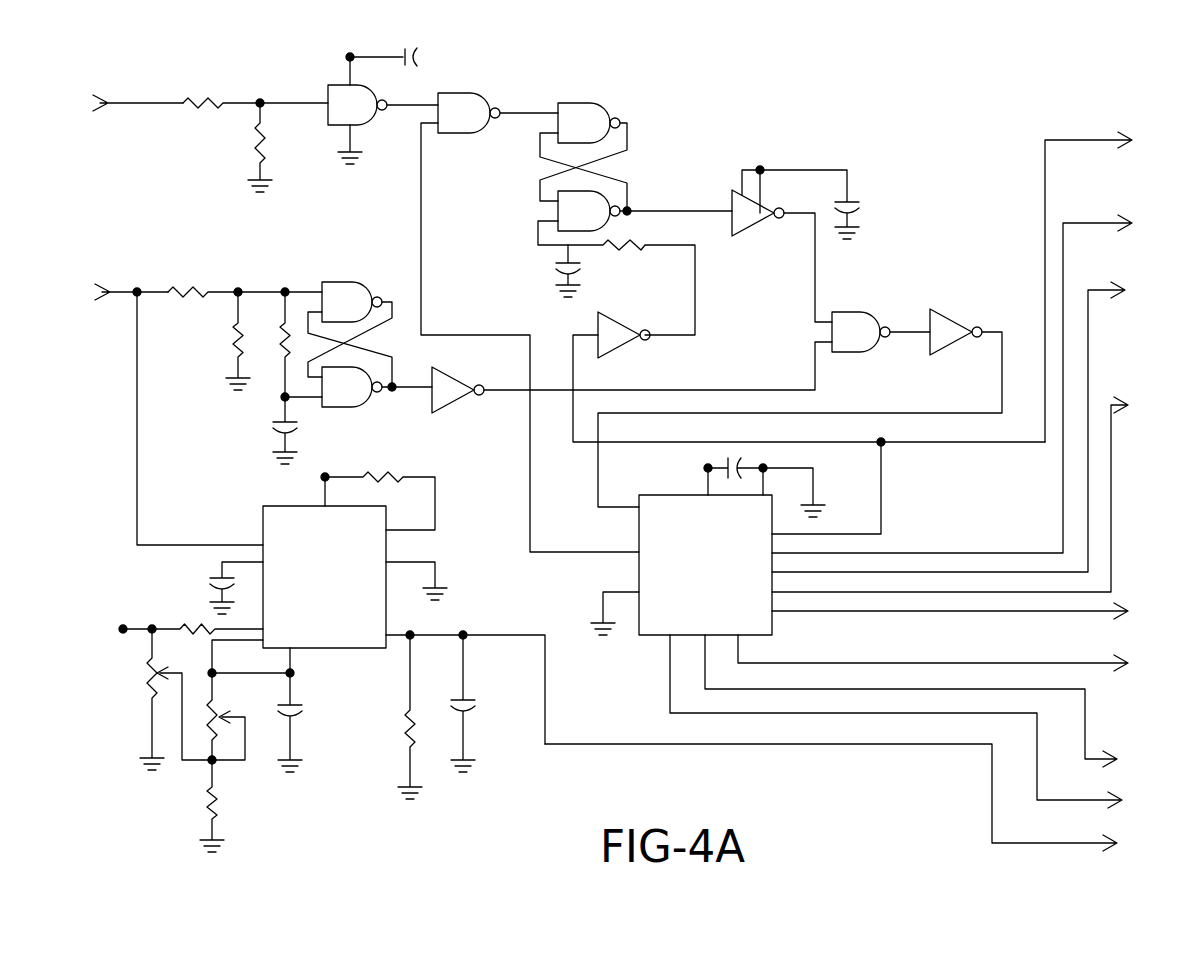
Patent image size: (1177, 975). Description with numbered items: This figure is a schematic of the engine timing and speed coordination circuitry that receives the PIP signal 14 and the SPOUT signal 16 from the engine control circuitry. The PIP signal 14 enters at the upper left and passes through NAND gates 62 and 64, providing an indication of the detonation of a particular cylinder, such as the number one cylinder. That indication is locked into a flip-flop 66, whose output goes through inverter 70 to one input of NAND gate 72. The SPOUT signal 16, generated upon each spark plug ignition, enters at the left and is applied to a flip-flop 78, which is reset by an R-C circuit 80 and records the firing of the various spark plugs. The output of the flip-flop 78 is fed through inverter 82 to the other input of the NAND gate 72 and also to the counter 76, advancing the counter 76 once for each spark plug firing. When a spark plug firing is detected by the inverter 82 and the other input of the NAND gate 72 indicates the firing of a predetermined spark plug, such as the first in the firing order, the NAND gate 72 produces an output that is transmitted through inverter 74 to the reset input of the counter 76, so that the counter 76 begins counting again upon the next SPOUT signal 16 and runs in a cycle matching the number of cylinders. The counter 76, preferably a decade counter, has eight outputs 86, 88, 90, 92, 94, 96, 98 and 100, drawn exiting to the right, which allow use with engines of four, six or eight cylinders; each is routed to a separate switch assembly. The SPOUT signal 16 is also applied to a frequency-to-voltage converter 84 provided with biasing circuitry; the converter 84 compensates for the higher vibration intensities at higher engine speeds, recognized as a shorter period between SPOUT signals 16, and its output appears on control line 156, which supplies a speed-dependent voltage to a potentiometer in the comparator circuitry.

The PIP signal 14 is at (135, 103).
The SPOUT signal 16 is at (119, 292).
The NAND gate 62 is at (328, 90).
The NAND gate 64 is at (460, 100).
The flip-flop 66 is at (605, 150).
The inverter 70 is at (739, 230).
The NAND gate 72 is at (850, 320).
The inverter 74 is at (947, 323).
The counter 76 is at (639, 574).
The flip-flop 78 is at (384, 317).
The R-C circuit 80 is at (284, 400).
The inverter 82 is at (441, 406).
The frequency-to-voltage converter 84 is at (329, 645).
The counter output 86 is at (1075, 116).
The counter output 88 is at (1094, 225).
The counter output 90 is at (1107, 266).
The counter output 92 is at (1104, 448).
The counter output 94 is at (1112, 608).
The counter output 96 is at (1112, 668).
The counter output 98 is at (1098, 762).
The counter output 100 is at (1085, 802).
The control line 156 is at (1078, 845).